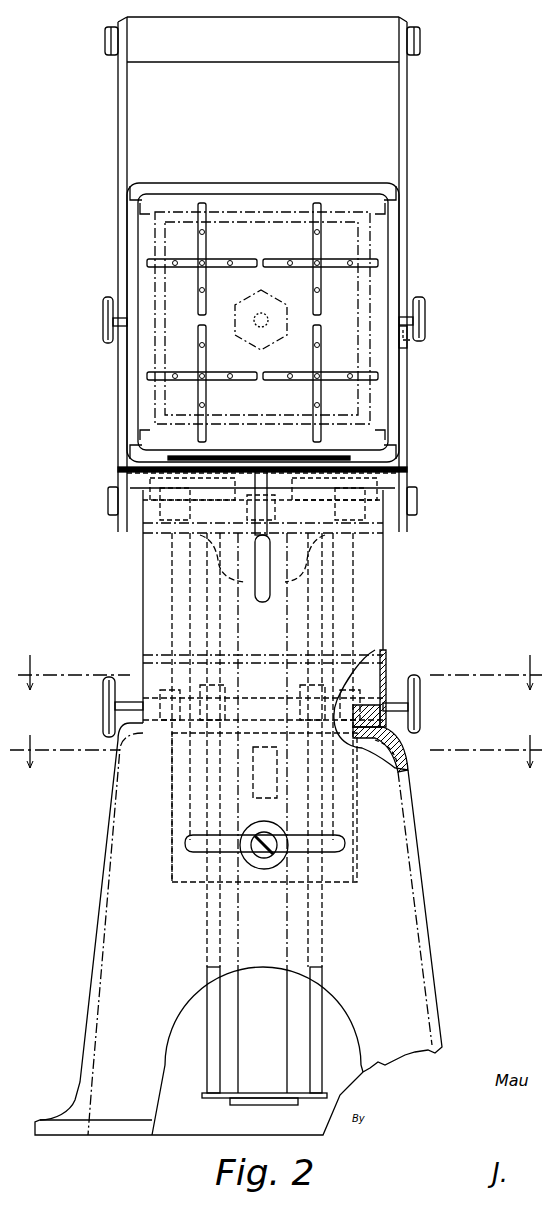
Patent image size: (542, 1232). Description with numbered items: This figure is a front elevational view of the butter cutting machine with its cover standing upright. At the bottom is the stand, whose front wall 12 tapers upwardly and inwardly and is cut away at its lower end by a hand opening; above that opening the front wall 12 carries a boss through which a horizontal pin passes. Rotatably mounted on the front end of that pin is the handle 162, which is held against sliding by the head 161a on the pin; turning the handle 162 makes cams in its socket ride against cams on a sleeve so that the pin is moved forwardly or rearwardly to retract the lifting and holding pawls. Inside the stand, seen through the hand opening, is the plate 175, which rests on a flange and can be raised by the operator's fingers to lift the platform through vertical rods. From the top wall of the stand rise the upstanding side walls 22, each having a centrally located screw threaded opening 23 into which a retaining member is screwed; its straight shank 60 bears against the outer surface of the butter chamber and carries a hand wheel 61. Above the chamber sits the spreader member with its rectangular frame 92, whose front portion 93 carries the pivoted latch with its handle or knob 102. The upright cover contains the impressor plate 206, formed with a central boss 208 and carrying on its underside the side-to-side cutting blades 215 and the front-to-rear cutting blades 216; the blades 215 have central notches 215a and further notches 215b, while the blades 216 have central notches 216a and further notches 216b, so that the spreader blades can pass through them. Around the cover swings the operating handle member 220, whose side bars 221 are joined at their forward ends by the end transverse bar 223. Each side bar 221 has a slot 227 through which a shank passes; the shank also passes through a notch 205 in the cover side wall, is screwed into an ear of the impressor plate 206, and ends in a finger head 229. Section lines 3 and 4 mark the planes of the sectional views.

The front wall 12 is at (405, 975).
The upstanding side walls 22 is at (380, 700).
The screw threaded openings 23 is at (410, 750).
The straight shank 60 is at (126, 702).
The hand wheel 61 is at (103, 717).
The rectangular frame 92 is at (262, 172).
The front portion 93 is at (343, 183).
The handle or knob 102 is at (256, 583).
The head 161a is at (265, 858).
The handle 162 is at (192, 845).
The plate 175 is at (220, 1098).
The notches 205 is at (398, 345).
The impressor plate 206 is at (390, 278).
The boss 208 is at (413, 300).
The cutting blades 215 is at (298, 262).
The central notches 215a is at (256, 262).
The notches 215b is at (292, 264).
The cutting blades 216 is at (312, 333).
The central notches 216a is at (318, 316).
The notches 216b is at (318, 402).
The operating handle member 220 is at (410, 128).
The side bars 221 is at (405, 167).
The end transverse bar 223 is at (243, 46).
The slots 227 is at (405, 340).
The finger head 229 is at (103, 320).
The section line 3- 3 is at (280, 691).
The section line 4- 4 is at (276, 770).